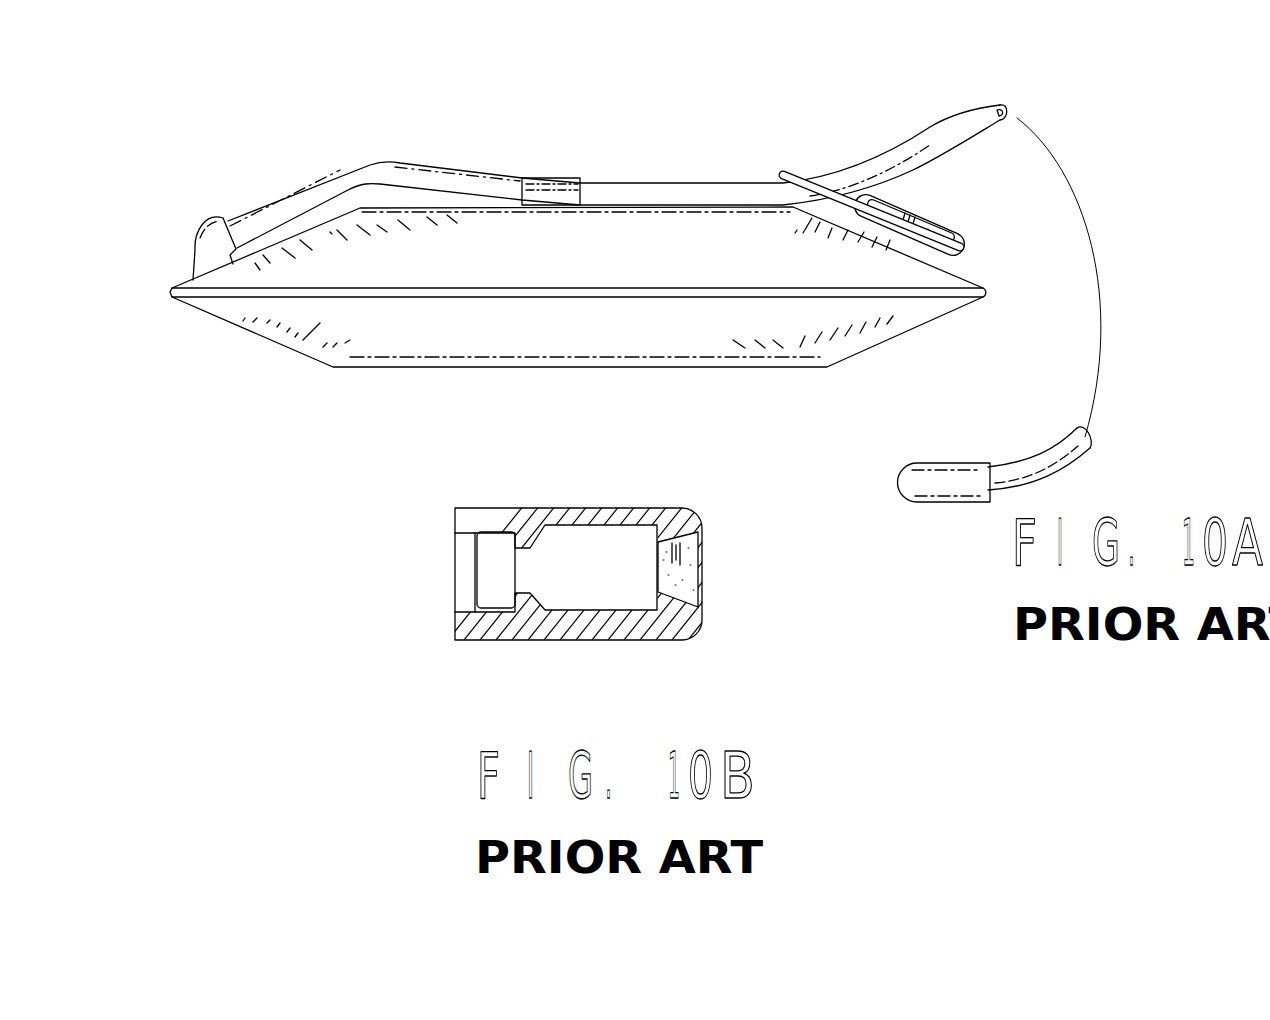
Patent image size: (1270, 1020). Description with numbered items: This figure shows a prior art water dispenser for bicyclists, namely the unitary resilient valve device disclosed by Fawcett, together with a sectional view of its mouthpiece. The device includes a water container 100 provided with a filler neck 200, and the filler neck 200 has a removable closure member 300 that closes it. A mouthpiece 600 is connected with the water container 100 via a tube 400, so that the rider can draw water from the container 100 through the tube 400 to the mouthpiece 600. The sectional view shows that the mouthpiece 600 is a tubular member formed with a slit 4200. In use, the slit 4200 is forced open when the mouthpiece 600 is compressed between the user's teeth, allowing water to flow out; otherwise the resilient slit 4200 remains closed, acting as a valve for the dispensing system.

In FIG. 10A, the water container 100 is at (632, 232).
In FIG. 10A, the tube 400 is at (917, 130).
In FIG. 10A, the removable closure member 300 is at (943, 231).
In FIG. 10A, the filler neck 200 is at (938, 253).
In FIG. 10A, the mouthpiece 600 is at (952, 503).
In FIG. 10B, the mouthpiece 600 is at (572, 507).
In FIG. 10B, the slit 4200 is at (703, 588).